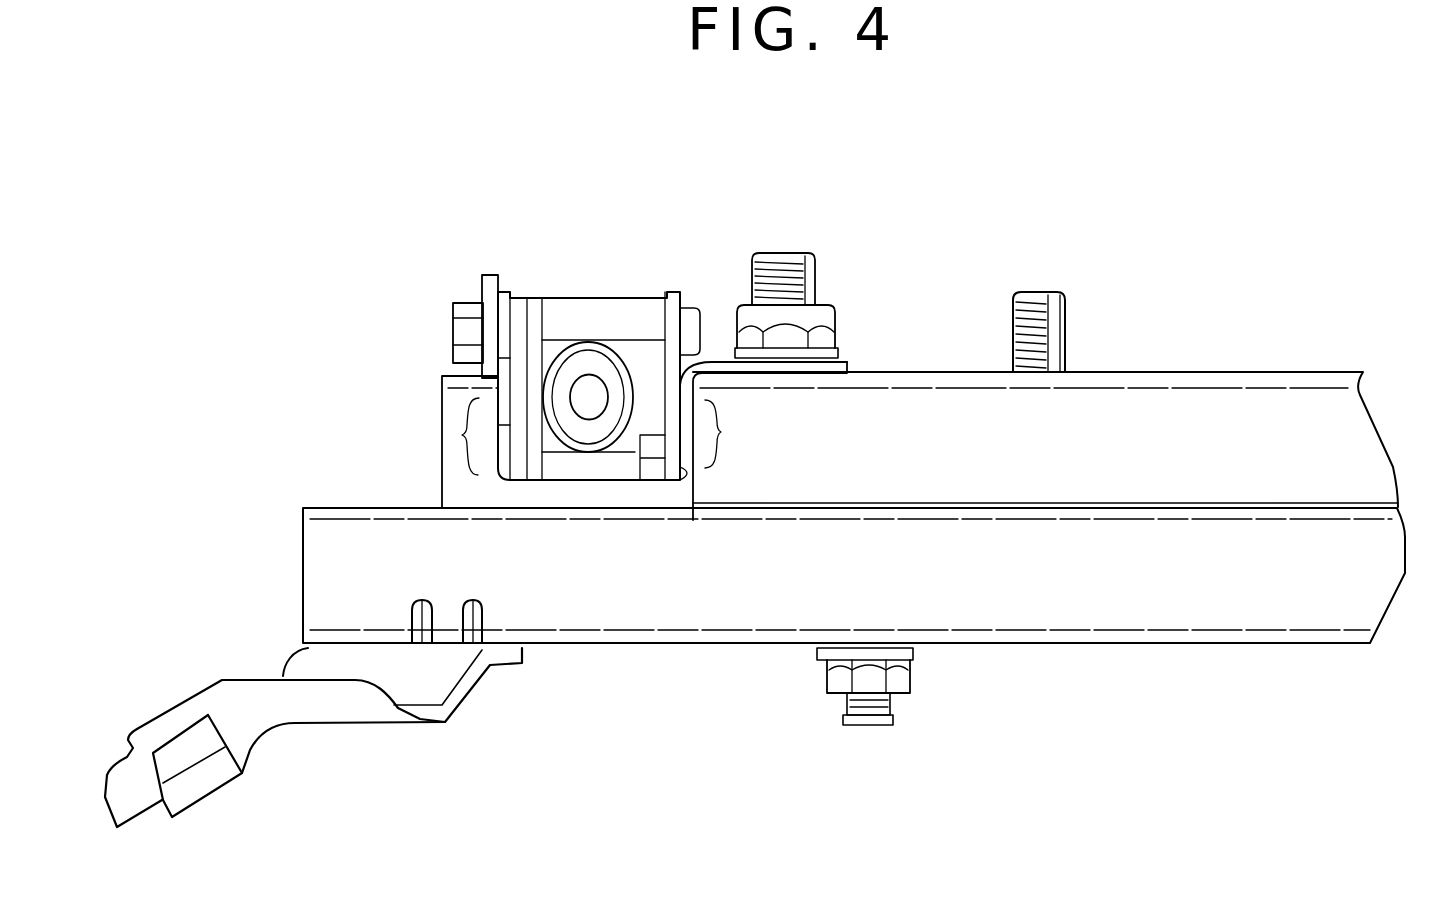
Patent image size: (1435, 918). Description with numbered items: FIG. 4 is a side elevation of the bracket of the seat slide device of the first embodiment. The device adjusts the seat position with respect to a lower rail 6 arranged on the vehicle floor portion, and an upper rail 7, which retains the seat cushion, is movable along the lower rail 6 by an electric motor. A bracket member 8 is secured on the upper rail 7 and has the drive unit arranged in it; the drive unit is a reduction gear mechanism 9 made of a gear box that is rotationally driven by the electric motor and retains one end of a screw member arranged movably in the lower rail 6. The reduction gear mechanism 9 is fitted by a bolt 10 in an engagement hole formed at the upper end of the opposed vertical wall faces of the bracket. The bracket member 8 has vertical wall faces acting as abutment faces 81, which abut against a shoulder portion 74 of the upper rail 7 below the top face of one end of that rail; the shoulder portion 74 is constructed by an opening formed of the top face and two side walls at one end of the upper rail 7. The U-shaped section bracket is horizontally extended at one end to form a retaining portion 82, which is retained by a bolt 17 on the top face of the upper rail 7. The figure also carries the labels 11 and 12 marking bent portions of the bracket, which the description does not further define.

The lower rail 6 is at (1083, 610).
The upper rail 7 is at (1167, 403).
The bracket member 8 is at (722, 280).
The reduction gear mechanism 9 is at (588, 317).
The bolt 10 is at (467, 332).
The first bent portion 11 is at (456, 433).
The second bent portion 12 is at (722, 430).
The bolt 17 is at (822, 317).
The shoulder portion 74 is at (667, 408).
The abutment faces 81 is at (667, 408).
The retaining portion 82 is at (712, 360).